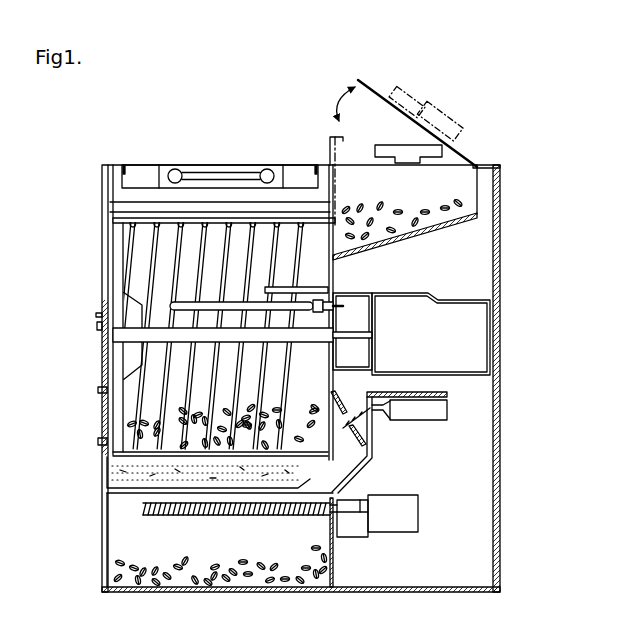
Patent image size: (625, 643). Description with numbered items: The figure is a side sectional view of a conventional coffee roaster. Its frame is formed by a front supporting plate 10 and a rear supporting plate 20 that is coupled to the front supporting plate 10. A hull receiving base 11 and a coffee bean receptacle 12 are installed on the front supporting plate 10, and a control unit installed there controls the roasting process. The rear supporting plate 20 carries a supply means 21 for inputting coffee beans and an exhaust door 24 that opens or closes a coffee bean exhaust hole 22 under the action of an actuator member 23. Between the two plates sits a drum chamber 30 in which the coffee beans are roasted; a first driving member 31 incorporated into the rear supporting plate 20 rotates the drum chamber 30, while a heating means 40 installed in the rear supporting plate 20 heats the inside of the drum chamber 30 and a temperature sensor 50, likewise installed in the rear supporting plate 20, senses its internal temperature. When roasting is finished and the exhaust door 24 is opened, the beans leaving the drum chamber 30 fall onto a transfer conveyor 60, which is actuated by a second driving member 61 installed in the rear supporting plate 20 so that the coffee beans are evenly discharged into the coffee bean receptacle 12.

The front supporting plate 10 is at (100, 192).
The hull receiving base 11 is at (117, 468).
The coffee bean receptacle 12 is at (120, 540).
The rear supporting plate 20 is at (503, 185).
The supply means 21 is at (453, 165).
The coffee bean exhaust hole 22 is at (333, 392).
The actuator member 23 is at (444, 408).
The exhaust door 24 is at (367, 440).
The drum chamber 30 is at (143, 248).
The first driving member 31 is at (477, 320).
The heating means 40 is at (190, 303).
The temperature sensor 50 is at (307, 290).
The transfer conveyor 60 is at (225, 516).
The second driving member 61 is at (393, 523).